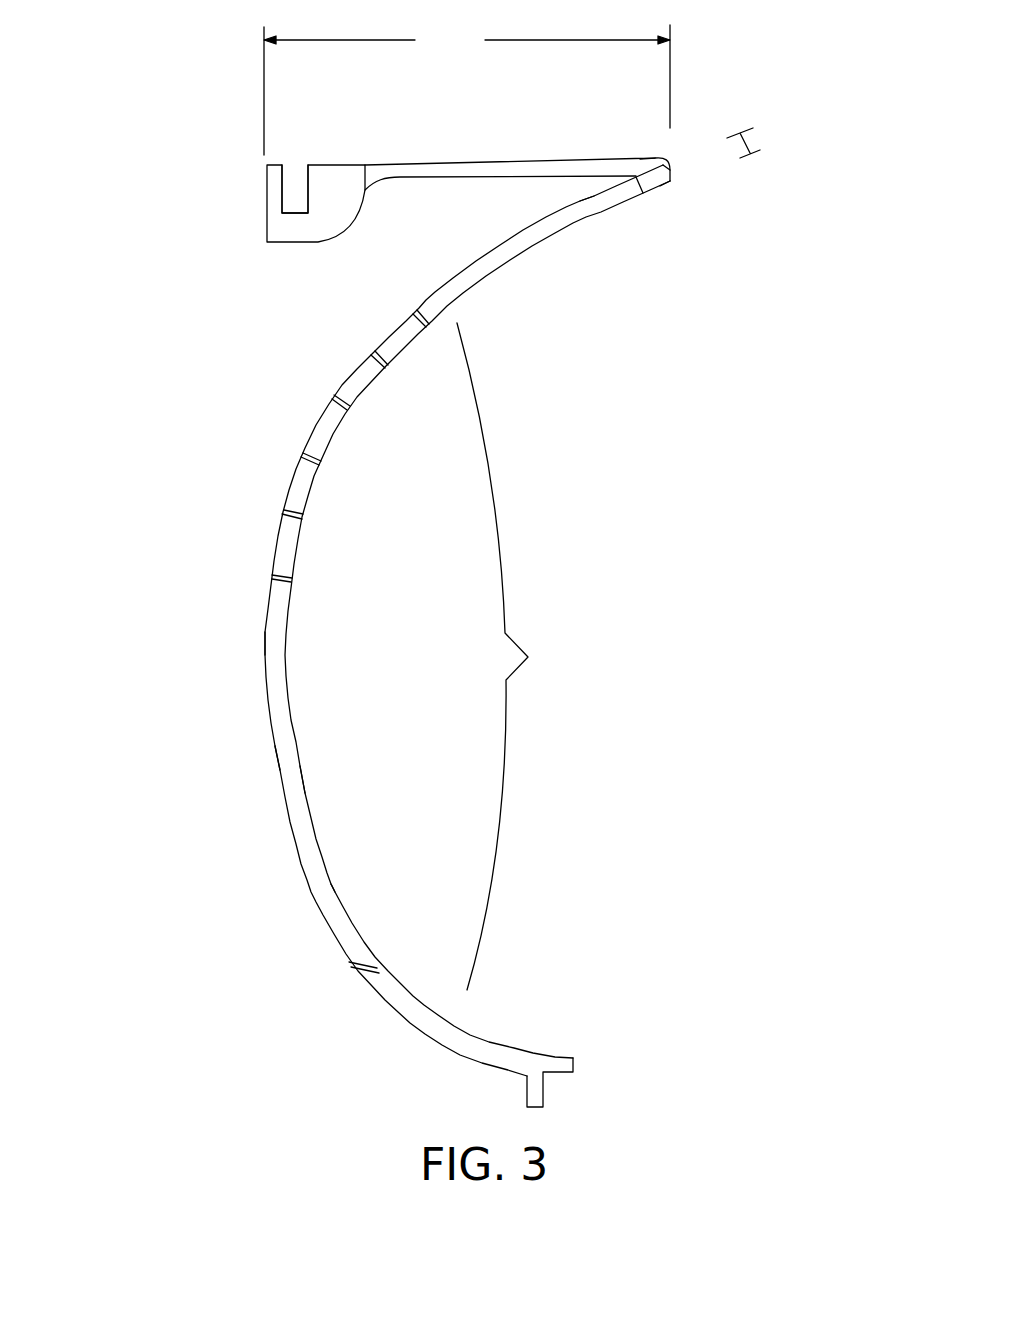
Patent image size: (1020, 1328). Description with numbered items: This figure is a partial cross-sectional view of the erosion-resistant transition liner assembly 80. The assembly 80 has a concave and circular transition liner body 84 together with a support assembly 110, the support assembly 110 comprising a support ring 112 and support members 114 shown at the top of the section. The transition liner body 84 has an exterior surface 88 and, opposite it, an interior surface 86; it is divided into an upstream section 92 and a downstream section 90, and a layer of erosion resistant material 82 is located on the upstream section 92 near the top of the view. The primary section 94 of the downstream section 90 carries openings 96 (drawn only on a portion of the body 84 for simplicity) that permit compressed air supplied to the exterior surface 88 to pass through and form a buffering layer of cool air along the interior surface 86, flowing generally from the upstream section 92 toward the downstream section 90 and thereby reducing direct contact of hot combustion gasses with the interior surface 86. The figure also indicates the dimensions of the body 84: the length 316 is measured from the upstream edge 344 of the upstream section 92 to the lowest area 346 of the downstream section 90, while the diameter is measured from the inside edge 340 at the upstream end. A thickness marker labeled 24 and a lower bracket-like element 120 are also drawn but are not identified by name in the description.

The panel thickness 24 is at (760, 138).
The erosion-resistant transition liner assembly 80 is at (140, 528).
The layer of erosion resistant material 82 is at (670, 184).
The transition liner body 84 is at (753, 571).
The interior surface 86 is at (302, 787).
The exterior surface 88 is at (278, 763).
The downstream section 90 is at (333, 903).
The upstream section 92 is at (585, 210).
The primary section 94 is at (513, 656).
The openings 96 is at (332, 396).
The support assembly 110 is at (235, 185).
The support ring 112 is at (288, 232).
The support members 114 is at (390, 168).
The lower mounting bracket 120 is at (537, 1090).
The length 316 is at (467, 90).
The inside edge 340 is at (672, 168).
The upstream edge 344 is at (655, 158).
The lowest area 346 is at (265, 640).